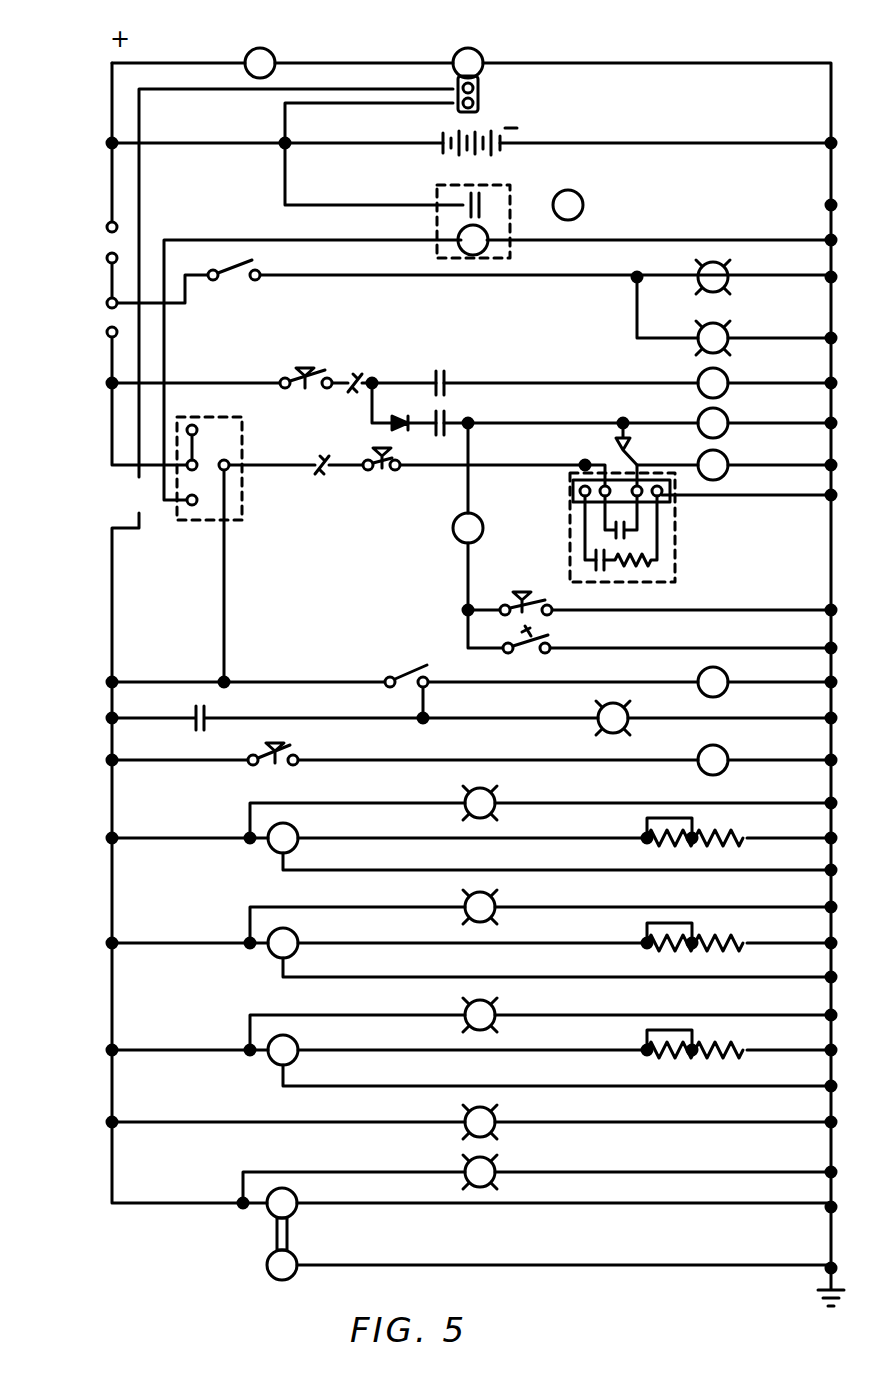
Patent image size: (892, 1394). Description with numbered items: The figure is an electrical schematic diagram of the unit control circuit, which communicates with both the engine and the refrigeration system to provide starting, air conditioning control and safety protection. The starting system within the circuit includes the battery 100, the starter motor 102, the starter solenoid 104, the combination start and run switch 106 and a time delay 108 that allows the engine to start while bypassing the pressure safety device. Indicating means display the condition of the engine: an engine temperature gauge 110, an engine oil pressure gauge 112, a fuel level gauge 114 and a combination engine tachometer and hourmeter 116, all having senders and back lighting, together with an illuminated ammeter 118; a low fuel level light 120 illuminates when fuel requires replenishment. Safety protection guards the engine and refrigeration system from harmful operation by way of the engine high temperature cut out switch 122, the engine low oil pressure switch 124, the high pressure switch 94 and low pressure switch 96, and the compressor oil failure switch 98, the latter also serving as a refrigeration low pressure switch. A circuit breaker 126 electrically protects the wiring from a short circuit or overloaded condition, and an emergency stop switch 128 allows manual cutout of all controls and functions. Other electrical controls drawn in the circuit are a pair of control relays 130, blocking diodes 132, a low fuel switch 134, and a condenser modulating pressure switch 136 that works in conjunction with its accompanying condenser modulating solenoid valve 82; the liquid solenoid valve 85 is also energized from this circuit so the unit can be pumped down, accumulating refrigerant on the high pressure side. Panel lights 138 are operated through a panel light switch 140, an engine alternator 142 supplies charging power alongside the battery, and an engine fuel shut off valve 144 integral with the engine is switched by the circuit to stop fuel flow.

The condenser modulating solenoid valve 82 is at (728, 750).
The liquid solenoid valve 85 is at (728, 455).
The high pressure switch 94 is at (376, 476).
The low pressure switch 96 is at (326, 339).
The compressor oil failure switch 98 is at (675, 553).
The battery 100 is at (480, 125).
The starter motor 102 is at (596, 183).
The starter solenoid 104 is at (478, 185).
The combination start and run switch 106 is at (242, 422).
The time delay 108 is at (360, 372).
The engine temperature gauge 110 is at (495, 1005).
The engine oil pressure gauge 112 is at (495, 897).
The fuel level gauge 114 is at (495, 793).
The combination engine tachometer and hourmeter 116 is at (495, 1162).
The ammeter 118 is at (283, 28).
The low fuel level light 120 is at (628, 707).
The engine high temperature cut out switch 122 is at (548, 636).
The engine low oil pressure switch 124 is at (510, 592).
The circuit breaker 126 is at (100, 233).
The emergency stop switch 128 is at (106, 322).
The control relays 130 is at (448, 368).
The blocking diodes 132 is at (390, 396).
The low fuel switch 134 is at (399, 668).
The condenser modulating pressure switch 136 is at (308, 744).
The panel lights 138 is at (728, 266).
The panel light switch 140 is at (254, 258).
The engine alternator 142 is at (480, 52).
The engine fuel shut off valve 144 is at (728, 372).